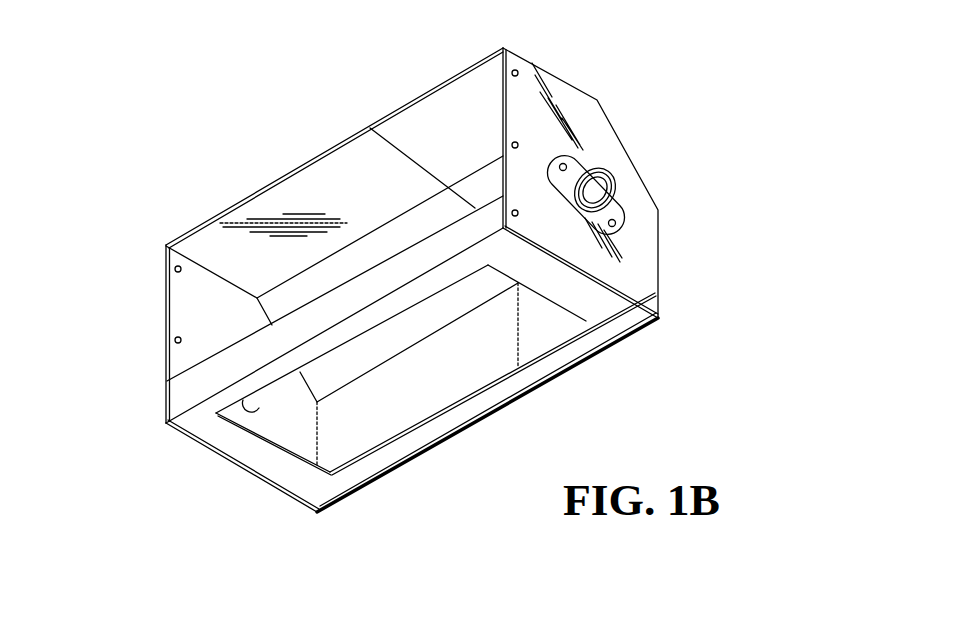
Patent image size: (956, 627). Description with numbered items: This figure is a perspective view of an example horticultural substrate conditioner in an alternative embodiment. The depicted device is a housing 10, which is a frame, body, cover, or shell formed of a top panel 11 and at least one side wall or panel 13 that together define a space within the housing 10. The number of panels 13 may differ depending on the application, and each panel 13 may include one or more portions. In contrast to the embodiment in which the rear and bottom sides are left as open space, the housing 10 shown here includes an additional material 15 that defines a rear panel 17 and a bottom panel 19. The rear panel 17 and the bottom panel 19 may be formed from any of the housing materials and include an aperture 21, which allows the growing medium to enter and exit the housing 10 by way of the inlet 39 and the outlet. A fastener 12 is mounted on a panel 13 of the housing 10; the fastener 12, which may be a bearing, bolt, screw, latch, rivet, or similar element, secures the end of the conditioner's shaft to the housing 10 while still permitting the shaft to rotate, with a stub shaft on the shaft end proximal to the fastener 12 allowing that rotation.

The housing 10 is at (592, 65).
The top panel 11 is at (373, 184).
The fastener 12 is at (601, 195).
The side panel 13 is at (490, 183).
The additional material 15 is at (214, 411).
The rear panel 17 is at (178, 412).
The bottom panel 19 is at (471, 410).
The aperture 21 is at (286, 300).
The inlet 39 is at (232, 243).